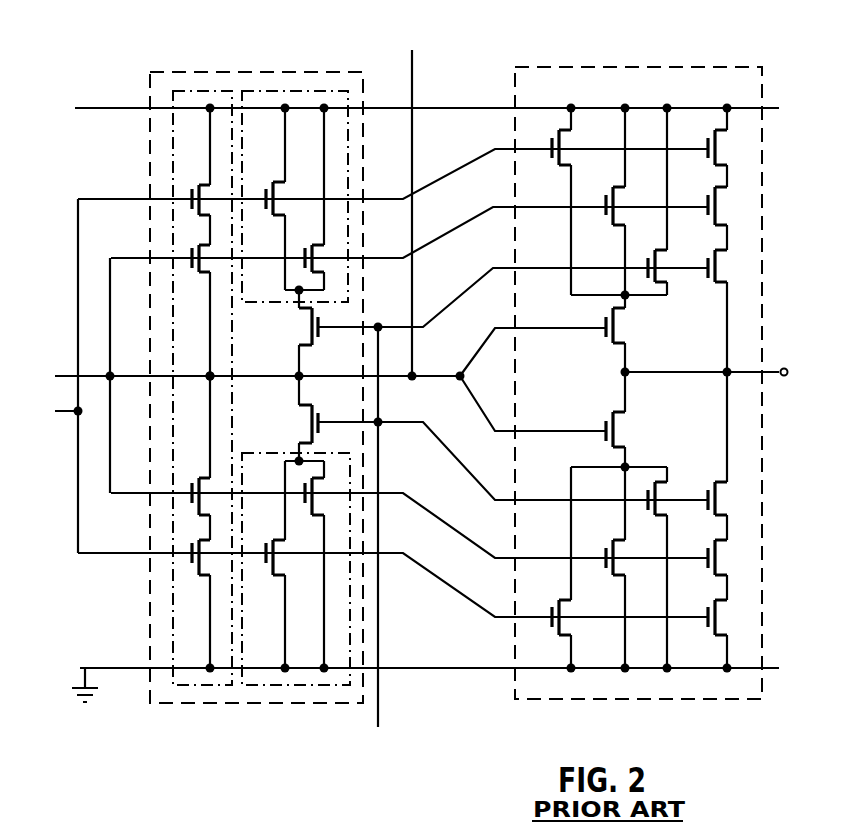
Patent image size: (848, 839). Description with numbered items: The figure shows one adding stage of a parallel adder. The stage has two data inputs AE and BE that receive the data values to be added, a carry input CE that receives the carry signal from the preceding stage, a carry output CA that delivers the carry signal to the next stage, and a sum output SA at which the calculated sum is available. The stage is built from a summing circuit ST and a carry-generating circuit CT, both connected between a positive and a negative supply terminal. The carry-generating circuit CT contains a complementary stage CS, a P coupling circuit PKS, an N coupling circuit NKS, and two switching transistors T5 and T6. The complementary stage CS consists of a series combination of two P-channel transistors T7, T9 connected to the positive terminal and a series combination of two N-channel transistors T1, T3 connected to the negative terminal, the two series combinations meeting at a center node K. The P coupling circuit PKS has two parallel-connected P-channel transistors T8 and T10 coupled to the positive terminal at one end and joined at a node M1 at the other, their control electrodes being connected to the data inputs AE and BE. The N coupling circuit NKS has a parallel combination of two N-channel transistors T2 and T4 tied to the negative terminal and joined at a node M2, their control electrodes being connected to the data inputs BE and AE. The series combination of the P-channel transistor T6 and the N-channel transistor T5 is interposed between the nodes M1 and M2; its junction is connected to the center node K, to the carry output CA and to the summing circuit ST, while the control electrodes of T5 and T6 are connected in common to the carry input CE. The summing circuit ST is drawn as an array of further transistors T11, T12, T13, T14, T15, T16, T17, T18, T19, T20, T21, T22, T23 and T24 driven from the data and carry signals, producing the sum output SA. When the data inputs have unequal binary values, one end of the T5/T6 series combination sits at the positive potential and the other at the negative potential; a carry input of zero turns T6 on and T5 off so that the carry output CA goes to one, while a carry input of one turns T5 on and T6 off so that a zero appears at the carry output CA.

The N-channel transistor T1 is at (205, 567).
The N-channel transistor T2 is at (277, 567).
The N-channel transistor T3 is at (205, 506).
The N-channel transistor T4 is at (316, 506).
The N-channel switching transistor T5 is at (307, 422).
The P-channel switching transistor T6 is at (306, 326).
The P-channel transistor T7 is at (204, 243).
The P-channel transistor T8 is at (317, 242).
The P-channel transistor T9 is at (204, 184).
The P-channel transistor T10 is at (274, 184).
The N-channel transistor T11 is at (576, 621).
The N-channel transistor T12 is at (730, 615).
The N-channel transistor T13 is at (629, 561).
The N-channel transistor T14 is at (730, 555).
The N-channel transistor T15 is at (672, 502).
The N-channel transistor T16 is at (730, 496).
The N-channel transistor T17 is at (629, 428).
The P-channel transistor T18 is at (629, 322).
The P-channel transistor T19 is at (675, 270).
The P-channel transistor T20 is at (731, 262).
The P-channel transistor T21 is at (611, 215).
The P-channel transistor T22 is at (731, 202).
The P-channel transistor T23 is at (557, 157).
The P-channel transistor T24 is at (731, 143).
The node M1 is at (292, 287).
The node M2 is at (292, 464).
The center node K is at (203, 376).
The data input AE is at (241, 375).
The data input BE is at (50, 376).
The carry output CA is at (413, 199).
The carry input CE is at (381, 544).
The sum output SA is at (725, 373).
The carry-generating circuit CT is at (218, 72).
The complementary stage CS is at (192, 676).
The P coupling circuit PKS is at (302, 90).
The N coupling circuit NKS is at (276, 676).
The summing circuit ST is at (600, 82).